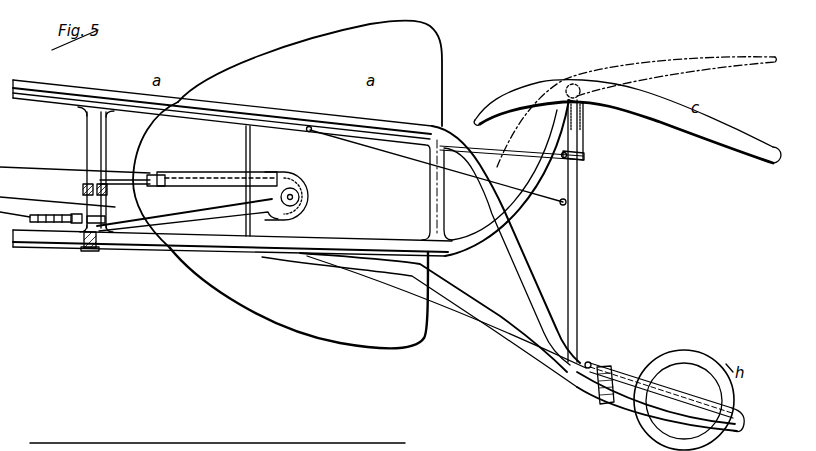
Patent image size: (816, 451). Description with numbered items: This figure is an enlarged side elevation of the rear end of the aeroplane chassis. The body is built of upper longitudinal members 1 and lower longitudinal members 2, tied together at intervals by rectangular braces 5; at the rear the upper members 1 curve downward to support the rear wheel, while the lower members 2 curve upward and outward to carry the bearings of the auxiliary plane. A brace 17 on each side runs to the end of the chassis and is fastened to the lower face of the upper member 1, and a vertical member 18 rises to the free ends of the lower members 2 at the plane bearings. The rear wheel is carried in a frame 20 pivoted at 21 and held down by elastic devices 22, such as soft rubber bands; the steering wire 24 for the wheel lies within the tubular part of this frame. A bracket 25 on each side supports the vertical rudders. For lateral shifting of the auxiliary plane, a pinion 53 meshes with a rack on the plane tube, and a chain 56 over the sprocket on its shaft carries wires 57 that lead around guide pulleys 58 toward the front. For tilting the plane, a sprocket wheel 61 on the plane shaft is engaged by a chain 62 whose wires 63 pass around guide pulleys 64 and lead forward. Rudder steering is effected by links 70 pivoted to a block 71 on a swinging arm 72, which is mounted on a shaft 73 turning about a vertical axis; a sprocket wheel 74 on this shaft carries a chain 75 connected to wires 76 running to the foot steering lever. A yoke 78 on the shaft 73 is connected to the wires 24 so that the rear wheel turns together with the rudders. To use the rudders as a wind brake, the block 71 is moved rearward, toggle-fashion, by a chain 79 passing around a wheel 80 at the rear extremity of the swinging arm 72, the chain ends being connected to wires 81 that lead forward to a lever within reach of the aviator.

The upper longitudinal member 1 is at (248, 107).
The lower longitudinal member 2 is at (243, 246).
The rectangular brace 5 is at (86, 113).
The brace 17 is at (520, 344).
The vertical member 18 is at (578, 258).
The frame 20 is at (631, 379).
The pivot 21 is at (590, 361).
The elastic devices 22 is at (603, 403).
The wire 24 is at (467, 316).
The frame or bracket 25 is at (251, 153).
The pinion 53 is at (546, 80).
The chain 56 is at (566, 122).
The wires 57 is at (540, 166).
The guide pulleys 58 is at (309, 130).
The sprocket wheel 61 is at (577, 80).
The chain 62 is at (584, 113).
The wires 63 is at (540, 155).
The guide pulleys 64 is at (585, 158).
The rod or link 70 is at (205, 172).
The block 71 is at (158, 174).
The swinging arm 72 is at (177, 188).
The shaft 73 is at (86, 183).
The sprocket wheel 74 is at (72, 214).
The chain 75 is at (57, 223).
The wires 76 is at (32, 217).
The yoke 78 is at (90, 252).
The chain 79 is at (284, 184).
The wheel 80 is at (299, 197).
The wires 81 is at (118, 170).